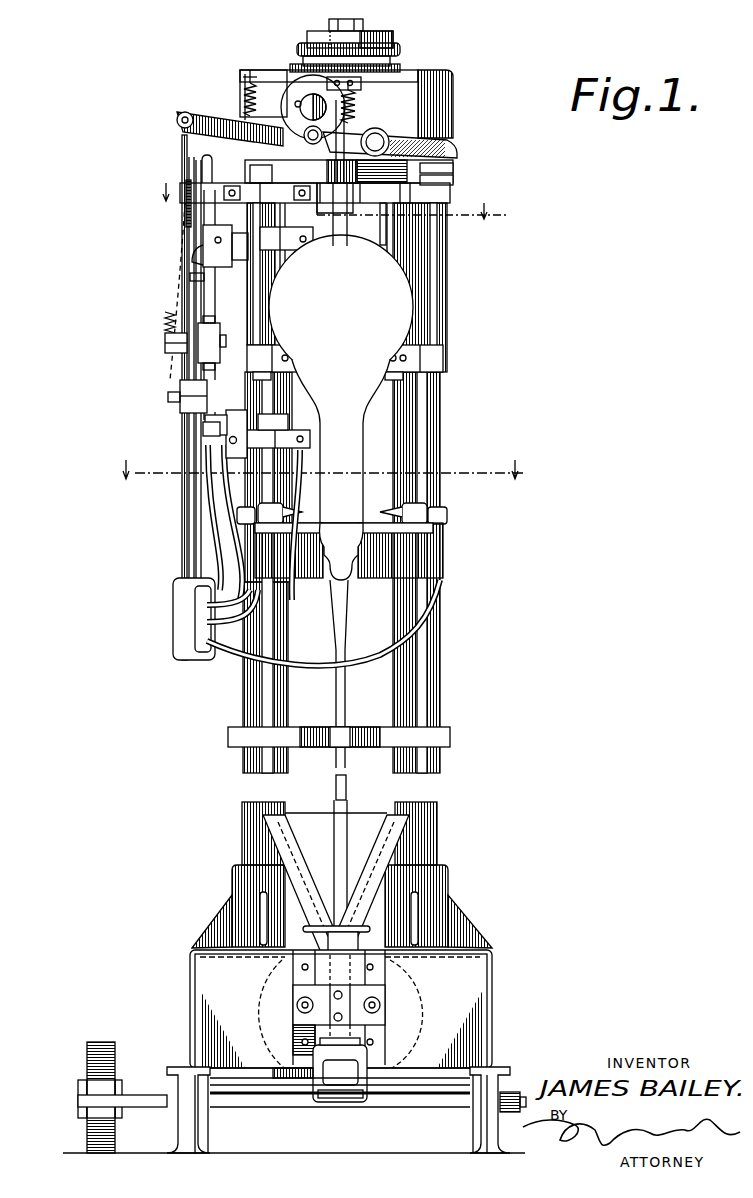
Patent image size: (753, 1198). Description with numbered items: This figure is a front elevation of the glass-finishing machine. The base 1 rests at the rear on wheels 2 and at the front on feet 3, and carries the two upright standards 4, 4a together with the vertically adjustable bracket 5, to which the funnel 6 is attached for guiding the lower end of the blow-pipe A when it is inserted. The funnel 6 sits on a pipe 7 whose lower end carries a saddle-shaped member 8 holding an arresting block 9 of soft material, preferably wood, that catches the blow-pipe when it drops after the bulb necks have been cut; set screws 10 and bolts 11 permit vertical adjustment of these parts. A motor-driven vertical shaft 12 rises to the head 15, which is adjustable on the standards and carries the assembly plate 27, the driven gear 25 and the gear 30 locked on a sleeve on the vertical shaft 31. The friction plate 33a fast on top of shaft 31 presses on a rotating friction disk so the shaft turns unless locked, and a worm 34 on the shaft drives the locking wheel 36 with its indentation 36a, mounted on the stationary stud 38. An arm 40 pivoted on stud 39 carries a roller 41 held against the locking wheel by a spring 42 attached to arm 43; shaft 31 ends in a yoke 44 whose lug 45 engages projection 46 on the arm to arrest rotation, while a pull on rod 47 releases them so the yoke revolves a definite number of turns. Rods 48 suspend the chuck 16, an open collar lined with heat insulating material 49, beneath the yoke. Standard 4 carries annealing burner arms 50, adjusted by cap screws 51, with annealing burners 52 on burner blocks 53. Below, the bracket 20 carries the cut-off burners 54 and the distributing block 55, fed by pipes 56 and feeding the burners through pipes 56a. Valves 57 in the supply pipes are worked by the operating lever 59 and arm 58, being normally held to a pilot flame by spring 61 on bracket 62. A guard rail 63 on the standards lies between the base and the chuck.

The base 1 is at (470, 1000).
The wheels 2 is at (107, 1070).
The feet 3 is at (210, 1123).
The standard 4 is at (256, 697).
The standard 4a is at (441, 668).
The vertically adjustable bracket 5 is at (300, 994).
The funnel 6 is at (382, 845).
The pipe 7 is at (436, 977).
The saddle-shaped member 8 is at (295, 1126).
The arresting block 9 is at (343, 1076).
The set screws 10 is at (300, 1018).
The bolts 11 is at (380, 1010).
The vertical shaft 12 is at (349, 232).
The head 15 is at (456, 110).
The chuck 16 is at (445, 358).
The bracket 20 is at (432, 556).
The driven gear 25 is at (395, 62).
The assembly plate 27 is at (367, 37).
The gear 30 is at (313, 80).
The vertical shaft 31 is at (334, 23).
The friction plate 33a is at (400, 48).
The worm 34 is at (358, 105).
The locking wheel 36 is at (297, 103).
The indentation 36a is at (283, 117).
The stationary stud 38 is at (250, 78).
The stud 39 is at (381, 215).
The arm 40 is at (448, 148).
The roller 41 is at (340, 247).
The spring 42 is at (243, 103).
The arm 43 is at (246, 78).
The yoke 44 is at (404, 194).
The lug or projection 45 is at (454, 182).
The projection 46 is at (454, 168).
The rod 47 is at (182, 151).
The rods 48 is at (254, 294).
The heat insulating material 49 is at (300, 354).
The annealing burner arms 50 is at (208, 240).
The cap screws 51 is at (306, 245).
The annealing burners 52 is at (195, 277).
The burner blocks 53 is at (212, 262).
The cut-off burners 54 is at (400, 502).
The distributing block 55 is at (176, 590).
The pipes 56 is at (197, 175).
The pipes 56a is at (205, 592).
The valves 57 is at (205, 345).
The arm 58 is at (165, 340).
The operating lever 59 is at (172, 400).
The spring 61 is at (165, 318).
The bracket 62 is at (186, 190).
The guard rail 63 is at (440, 742).
The blow-pipe A is at (345, 770).